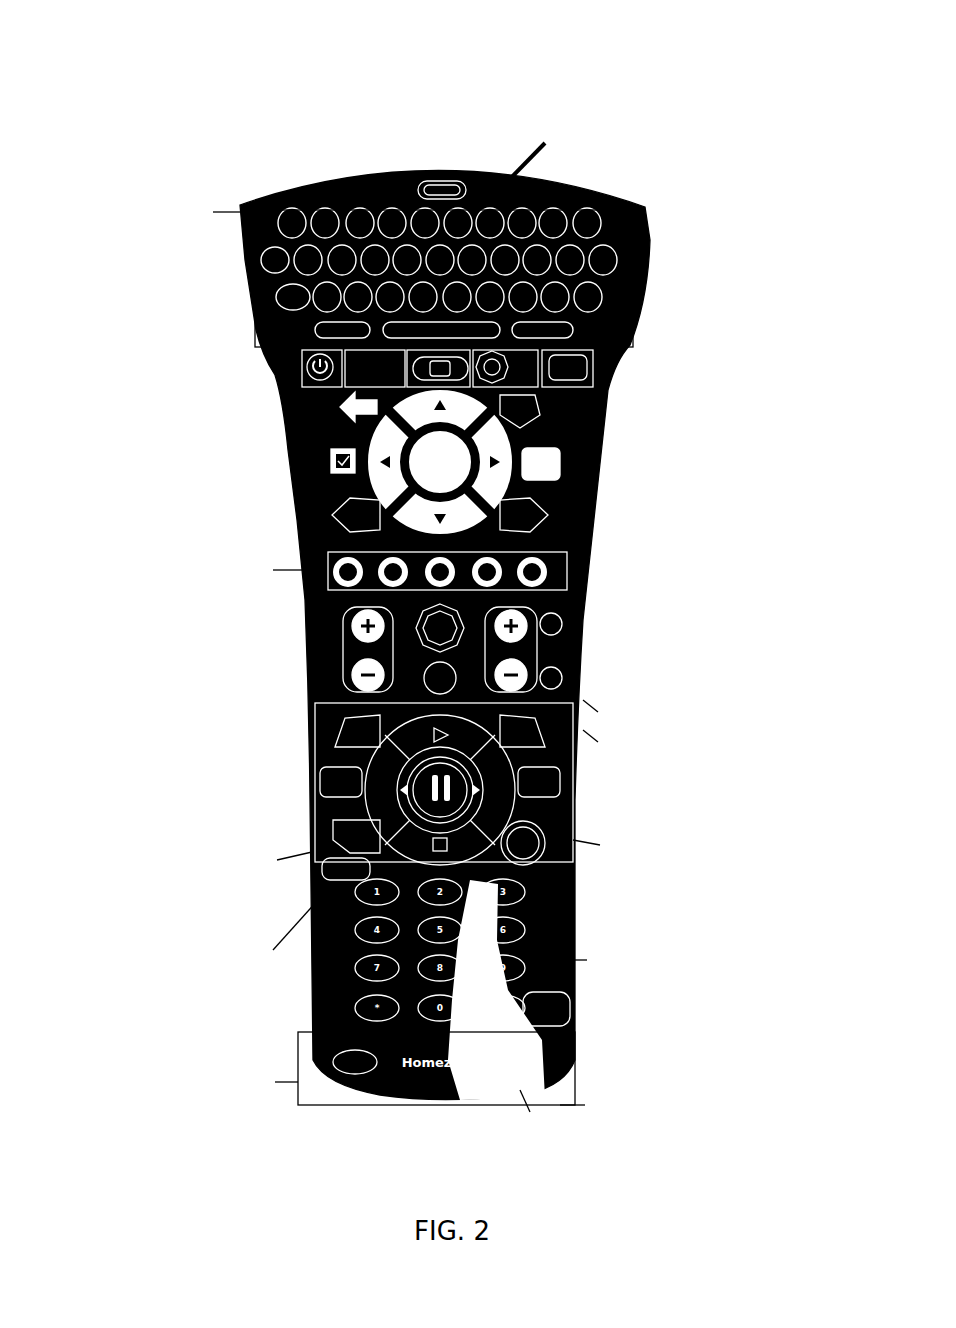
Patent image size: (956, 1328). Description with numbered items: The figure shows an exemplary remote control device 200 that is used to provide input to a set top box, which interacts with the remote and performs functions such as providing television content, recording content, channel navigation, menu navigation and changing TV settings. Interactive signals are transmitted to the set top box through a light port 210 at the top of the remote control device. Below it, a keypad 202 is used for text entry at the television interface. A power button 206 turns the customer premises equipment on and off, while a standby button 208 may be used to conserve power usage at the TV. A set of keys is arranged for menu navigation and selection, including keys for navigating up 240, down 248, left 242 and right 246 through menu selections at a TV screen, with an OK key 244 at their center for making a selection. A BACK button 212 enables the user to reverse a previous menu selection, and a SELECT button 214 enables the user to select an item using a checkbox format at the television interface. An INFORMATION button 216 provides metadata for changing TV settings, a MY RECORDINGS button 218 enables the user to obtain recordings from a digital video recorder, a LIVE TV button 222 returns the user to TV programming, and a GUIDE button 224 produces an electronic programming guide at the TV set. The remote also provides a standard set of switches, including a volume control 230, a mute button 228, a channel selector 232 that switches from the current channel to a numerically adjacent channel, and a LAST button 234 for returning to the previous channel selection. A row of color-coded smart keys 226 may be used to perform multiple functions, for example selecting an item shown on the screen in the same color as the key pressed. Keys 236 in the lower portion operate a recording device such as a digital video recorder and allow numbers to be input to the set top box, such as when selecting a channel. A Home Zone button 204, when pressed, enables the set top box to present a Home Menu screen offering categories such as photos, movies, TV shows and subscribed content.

The remote control device 200 is at (578, 74).
The keypad 202 is at (552, 200).
The Home Zone button 204 is at (453, 360).
The power button 206 is at (607, 372).
The standby button 208 is at (302, 373).
The light port 210 is at (412, 183).
The BACK button 212 is at (335, 405).
The SELECT button 214 is at (330, 462).
The INFORMATION button 216 is at (347, 513).
The MY RECORDINGS button 218 is at (607, 378).
The LIVE TV button 222 is at (597, 447).
The guide button 224 is at (587, 520).
The color-coded smart keys 226 is at (547, 570).
The mute button 228 is at (410, 615).
The volume control 230 is at (367, 640).
The channel selector 232 is at (570, 655).
The LAST button 234 is at (430, 682).
The keys for operating a recording device and inputting numbers 236 is at (573, 800).
The up navigation key 240 is at (327, 387).
The left navigation key 242 is at (378, 445).
The OK key 244 is at (438, 465).
The right navigation key 246 is at (487, 446).
The down navigation key 248 is at (463, 520).